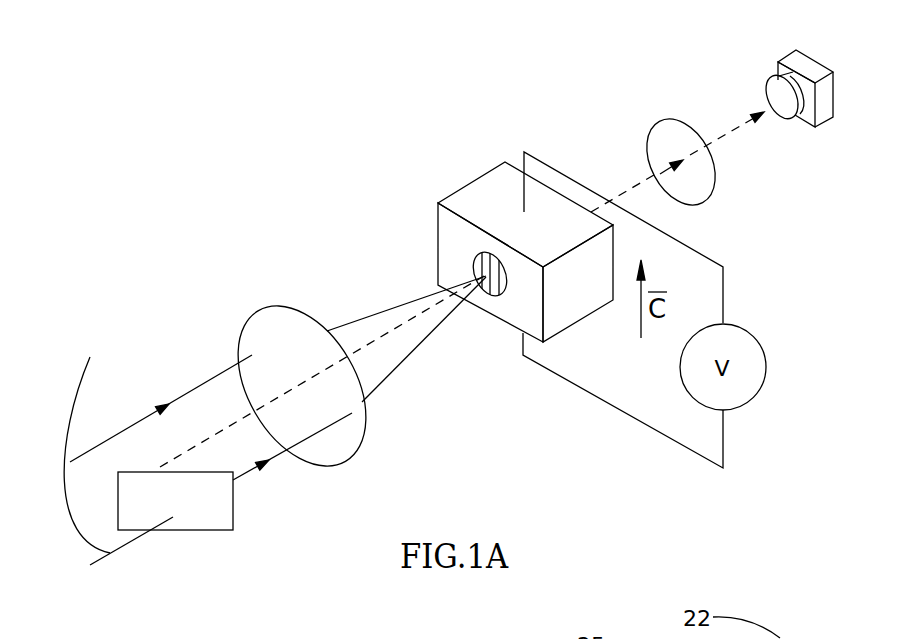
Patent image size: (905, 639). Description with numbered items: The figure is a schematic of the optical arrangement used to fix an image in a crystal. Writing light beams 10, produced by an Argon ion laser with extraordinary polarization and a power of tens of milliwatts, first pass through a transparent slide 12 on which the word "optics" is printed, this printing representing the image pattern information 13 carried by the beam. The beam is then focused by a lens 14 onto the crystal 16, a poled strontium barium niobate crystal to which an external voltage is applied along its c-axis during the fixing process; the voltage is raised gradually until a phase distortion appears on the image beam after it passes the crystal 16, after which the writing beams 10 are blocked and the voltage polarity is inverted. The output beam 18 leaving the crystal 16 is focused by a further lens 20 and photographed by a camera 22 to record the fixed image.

The writing light beams 10 is at (127, 427).
The transparent slide 12 is at (233, 485).
The image pattern information 13 is at (188, 530).
The lens 14 is at (275, 303).
The crystal 16 is at (477, 177).
The output beam 18 is at (633, 185).
The lens 20 is at (670, 117).
The camera 22 is at (780, 60).